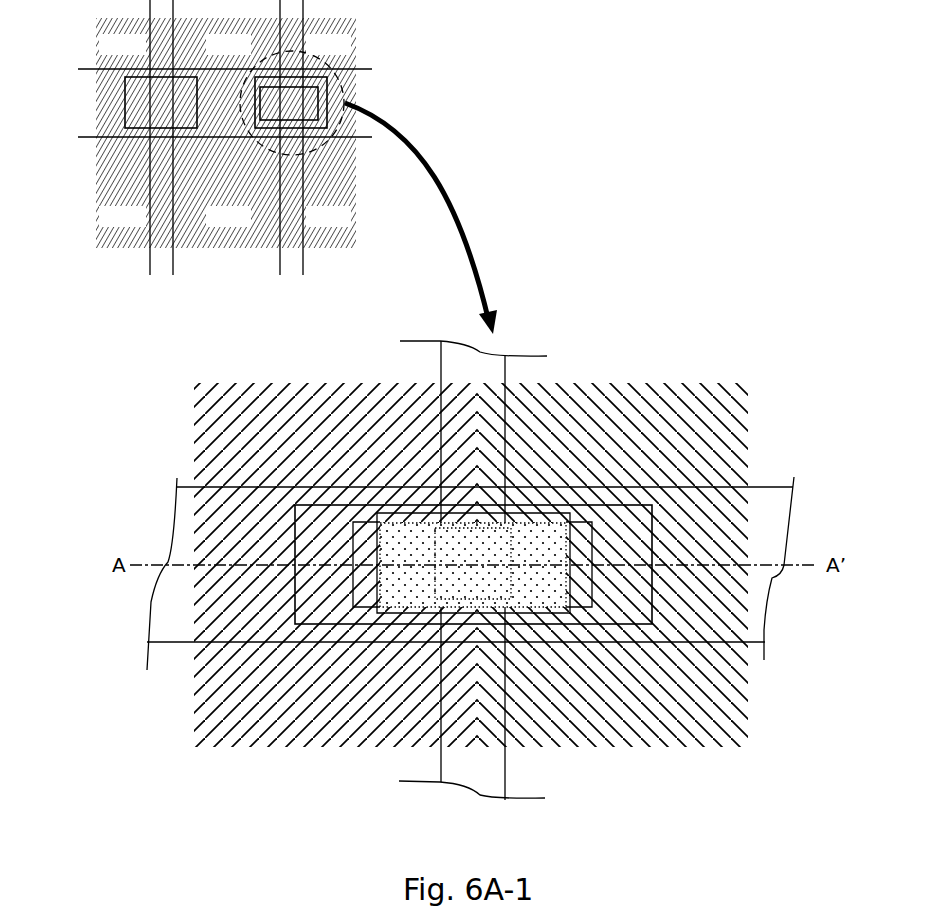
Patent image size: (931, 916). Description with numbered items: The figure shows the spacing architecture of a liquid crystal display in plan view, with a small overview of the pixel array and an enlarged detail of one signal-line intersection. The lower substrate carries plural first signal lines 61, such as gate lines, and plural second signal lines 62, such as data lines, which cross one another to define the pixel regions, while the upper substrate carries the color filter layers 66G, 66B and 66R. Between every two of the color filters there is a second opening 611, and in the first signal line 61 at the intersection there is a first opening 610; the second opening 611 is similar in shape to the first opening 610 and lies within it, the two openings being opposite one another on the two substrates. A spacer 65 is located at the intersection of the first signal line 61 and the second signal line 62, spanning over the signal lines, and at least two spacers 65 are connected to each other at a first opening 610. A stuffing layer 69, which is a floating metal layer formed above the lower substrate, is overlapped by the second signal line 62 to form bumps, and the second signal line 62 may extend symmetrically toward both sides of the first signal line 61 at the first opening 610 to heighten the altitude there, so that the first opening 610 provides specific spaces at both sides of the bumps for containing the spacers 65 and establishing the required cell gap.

The first signal line 61 is at (83, 95).
The second signal line 62 is at (148, 335).
The spacer 65 is at (405, 72).
The green color filter layer 66G is at (226, 133).
The blue color filter layer 66B is at (335, 565).
The red color filter layer 66R is at (612, 565).
The stuffing layer 69 is at (512, 606).
The first opening 610 is at (387, 612).
The second opening 611 is at (388, 590).